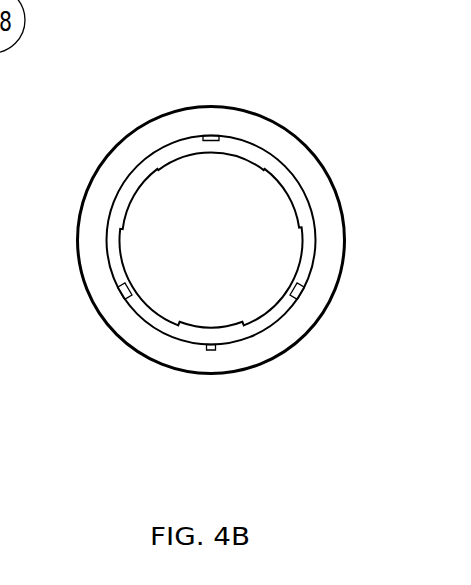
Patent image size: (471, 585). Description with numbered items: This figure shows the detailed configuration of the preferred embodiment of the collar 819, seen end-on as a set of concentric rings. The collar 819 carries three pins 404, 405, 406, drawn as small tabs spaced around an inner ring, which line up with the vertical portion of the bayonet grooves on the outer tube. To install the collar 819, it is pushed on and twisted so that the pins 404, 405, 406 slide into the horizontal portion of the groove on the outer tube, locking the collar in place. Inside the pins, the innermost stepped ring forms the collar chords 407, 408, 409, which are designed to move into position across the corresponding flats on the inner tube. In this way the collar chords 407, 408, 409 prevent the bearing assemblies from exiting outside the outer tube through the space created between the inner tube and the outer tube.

The collar 819 is at (283, 117).
The collar chord 408 is at (287, 200).
The collar chord 407 is at (136, 198).
The pin 404 is at (210, 133).
The pin 405 is at (118, 293).
The pin 406 is at (305, 292).
The collar chord 409 is at (211, 326).